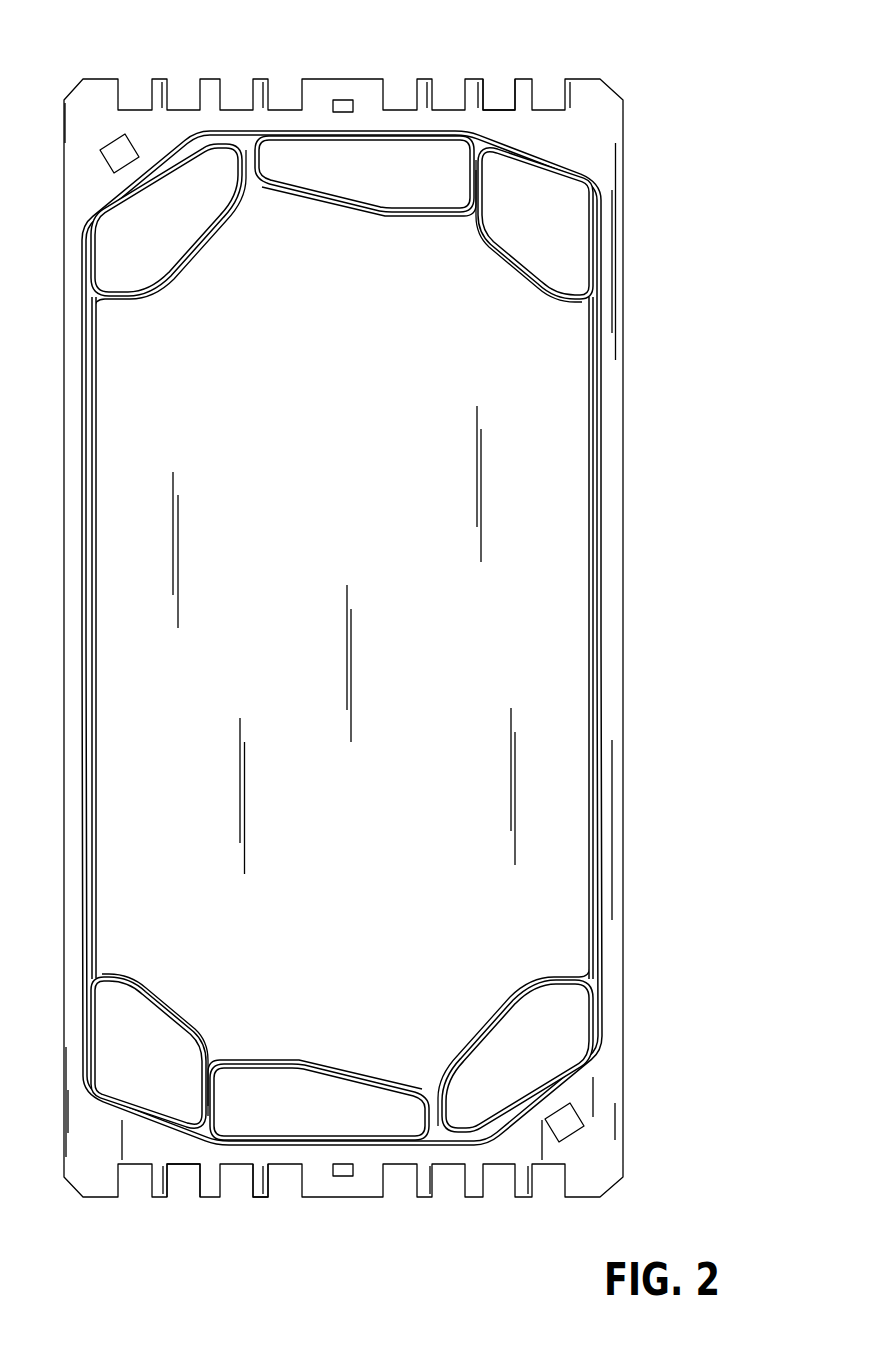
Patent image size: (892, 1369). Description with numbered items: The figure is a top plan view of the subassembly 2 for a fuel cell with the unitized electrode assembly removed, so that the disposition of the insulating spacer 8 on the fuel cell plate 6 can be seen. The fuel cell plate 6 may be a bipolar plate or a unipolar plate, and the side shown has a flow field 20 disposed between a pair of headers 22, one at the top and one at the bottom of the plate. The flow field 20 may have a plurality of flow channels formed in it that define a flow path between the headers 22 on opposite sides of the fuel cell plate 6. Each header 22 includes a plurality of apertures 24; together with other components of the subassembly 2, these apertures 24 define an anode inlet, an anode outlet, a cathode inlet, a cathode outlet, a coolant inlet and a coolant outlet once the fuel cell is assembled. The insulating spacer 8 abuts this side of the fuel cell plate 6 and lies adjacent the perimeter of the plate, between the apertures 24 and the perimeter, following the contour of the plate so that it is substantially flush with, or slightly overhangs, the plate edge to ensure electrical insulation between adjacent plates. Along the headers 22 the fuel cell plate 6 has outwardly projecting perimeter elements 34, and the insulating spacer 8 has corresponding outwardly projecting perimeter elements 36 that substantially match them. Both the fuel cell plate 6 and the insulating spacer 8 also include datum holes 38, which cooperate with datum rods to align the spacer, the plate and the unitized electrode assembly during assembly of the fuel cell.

The subassembly 2 is at (647, 521).
The fuel cell plate 6 is at (601, 604).
The insulating spacer 8 is at (610, 691).
The flow field 20 is at (321, 630).
The header 22 is at (498, 112).
The aperture 24 is at (509, 180).
The outwardly projecting perimeter element 34 is at (261, 1204).
The outwardly projecting perimeter element 36 is at (262, 1197).
The datum hole 38 is at (580, 1133).